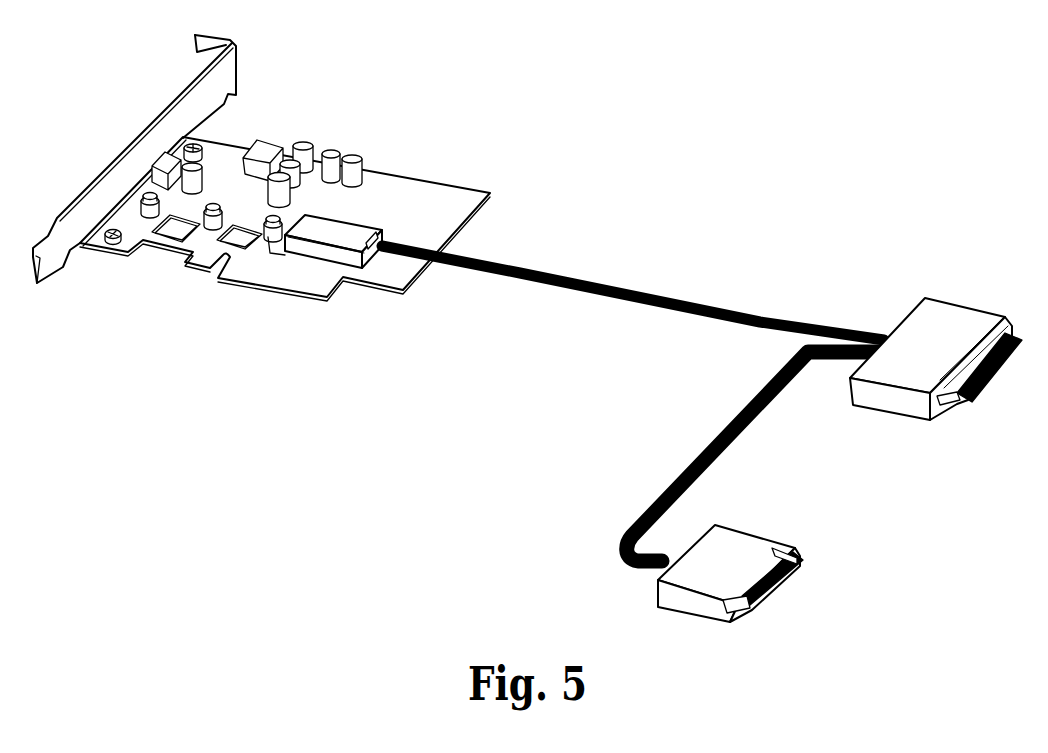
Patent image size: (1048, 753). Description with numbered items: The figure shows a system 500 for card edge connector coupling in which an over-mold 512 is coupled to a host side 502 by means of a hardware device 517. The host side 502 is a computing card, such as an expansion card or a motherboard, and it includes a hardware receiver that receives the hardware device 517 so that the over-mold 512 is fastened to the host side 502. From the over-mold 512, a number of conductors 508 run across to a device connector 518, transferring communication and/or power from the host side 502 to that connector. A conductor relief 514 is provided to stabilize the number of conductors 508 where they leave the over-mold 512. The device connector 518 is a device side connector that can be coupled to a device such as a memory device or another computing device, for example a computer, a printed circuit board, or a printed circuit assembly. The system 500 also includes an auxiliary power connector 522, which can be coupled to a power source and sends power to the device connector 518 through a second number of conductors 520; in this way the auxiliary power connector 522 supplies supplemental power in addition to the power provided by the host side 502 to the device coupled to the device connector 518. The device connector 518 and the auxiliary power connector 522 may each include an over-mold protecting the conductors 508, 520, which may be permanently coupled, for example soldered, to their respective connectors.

The system 500 is at (527, 328).
The host side 502 is at (490, 193).
The number of conductors 508 is at (633, 290).
The over-mold 512 is at (320, 256).
The conductor relief 514 is at (367, 257).
The hardware device 517 is at (273, 233).
The device connector 518 is at (968, 303).
The number of conductors 520 is at (743, 427).
The auxiliary power connector 522 is at (753, 523).